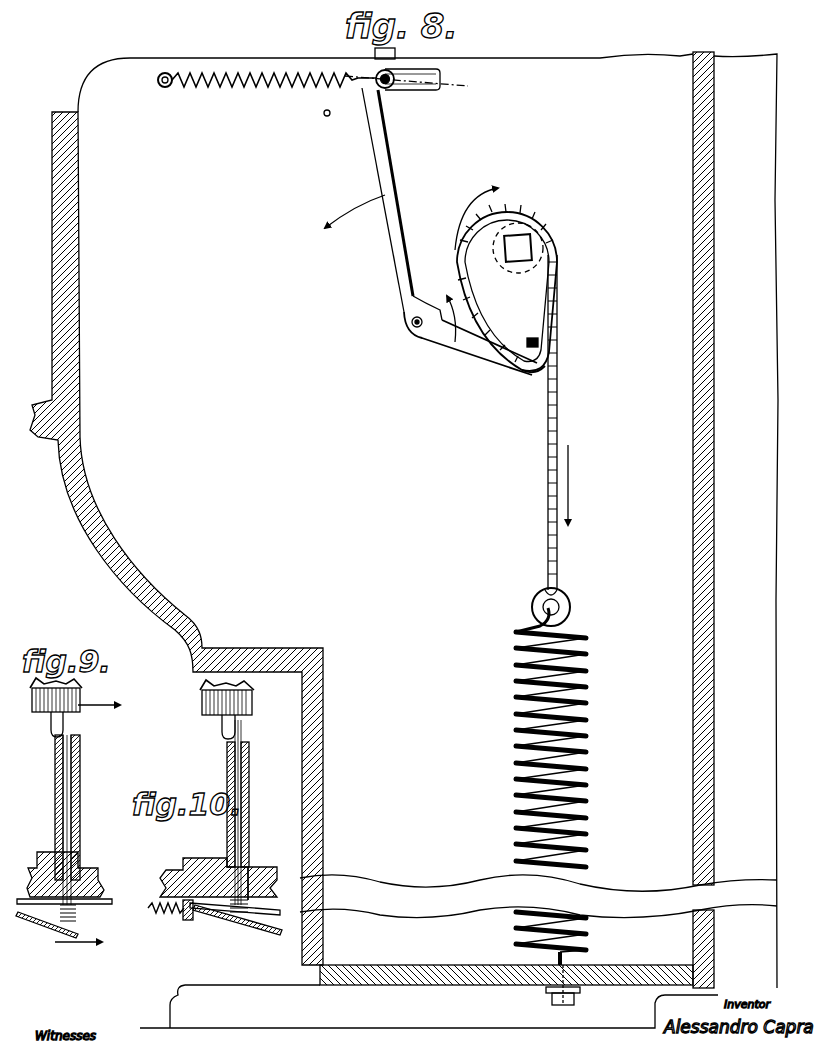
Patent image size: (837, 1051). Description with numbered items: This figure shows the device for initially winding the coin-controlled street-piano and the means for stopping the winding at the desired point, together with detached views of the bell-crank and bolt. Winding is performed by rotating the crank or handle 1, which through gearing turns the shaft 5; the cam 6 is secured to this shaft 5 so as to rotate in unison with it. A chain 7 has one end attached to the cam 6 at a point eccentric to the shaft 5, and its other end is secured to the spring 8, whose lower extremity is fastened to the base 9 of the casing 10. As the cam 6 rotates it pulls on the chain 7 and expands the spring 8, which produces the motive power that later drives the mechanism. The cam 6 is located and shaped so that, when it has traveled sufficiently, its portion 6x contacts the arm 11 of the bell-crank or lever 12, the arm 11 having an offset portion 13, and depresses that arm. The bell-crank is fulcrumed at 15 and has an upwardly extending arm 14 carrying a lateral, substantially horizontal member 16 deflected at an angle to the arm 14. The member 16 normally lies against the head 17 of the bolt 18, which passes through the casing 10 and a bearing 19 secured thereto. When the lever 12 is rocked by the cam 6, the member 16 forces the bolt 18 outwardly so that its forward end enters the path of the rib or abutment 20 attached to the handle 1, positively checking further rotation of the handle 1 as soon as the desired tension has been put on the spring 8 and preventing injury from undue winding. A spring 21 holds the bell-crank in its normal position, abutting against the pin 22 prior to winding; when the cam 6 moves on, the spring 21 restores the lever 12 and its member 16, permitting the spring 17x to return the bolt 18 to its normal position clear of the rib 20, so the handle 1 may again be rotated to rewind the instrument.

In FIG. 9, the crank or handle 1 is at (75, 695).
In FIG. 10, the crank or handle 1 is at (233, 697).
In FIG. 8, the shaft 5 is at (516, 250).
In FIG. 8, the cam 6 is at (506, 274).
In FIG. 8, the portion of the cam 6x is at (527, 366).
In FIG. 8, the chain 7 is at (567, 415).
In FIG. 8, the spring 8 is at (546, 770).
In FIG. 8, the base 9 is at (612, 948).
In FIG. 8, the casing 10 is at (404, 540).
In FIG. 9, the casing 10 is at (75, 874).
In FIG. 10, the casing 10 is at (212, 877).
In FIG. 8, the arm of the bell-crank 11 is at (470, 335).
In FIG. 8, the bell-crank or lever 12 is at (410, 320).
In FIG. 8, the offset portion 13 is at (540, 356).
In FIG. 8, the arm of the bell-crank 14 is at (383, 204).
In FIG. 9, the arm of the bell-crank 14 is at (108, 902).
In FIG. 10, the arm of the bell-crank 14 is at (275, 905).
In FIG. 8, the fulcrum 15 is at (416, 328).
In FIG. 8, the lateral member 16 is at (416, 75).
In FIG. 9, the lateral member 16 is at (47, 926).
In FIG. 10, the lateral member 16 is at (256, 934).
In FIG. 8, the head of the bolt 17 is at (386, 89).
In FIG. 9, the head of the bolt 17 is at (76, 915).
In FIG. 10, the head of the bolt 17 is at (275, 925).
In FIG. 9, the spring 17x is at (58, 930).
In FIG. 10, the spring 17x is at (250, 875).
In FIG. 8, the bolt 18 is at (410, 86).
In FIG. 9, the bolt 18 is at (70, 740).
In FIG. 10, the bolt 18 is at (243, 731).
In FIG. 9, the bearing 19 is at (84, 753).
In FIG. 10, the bearing 19 is at (249, 760).
In FIG. 9, the rib or abutment 20 is at (52, 727).
In FIG. 10, the rib or abutment 20 is at (224, 730).
In FIG. 8, the spring 21 is at (267, 89).
In FIG. 10, the spring 21 is at (166, 919).
In FIG. 8, the pin 22 is at (329, 123).